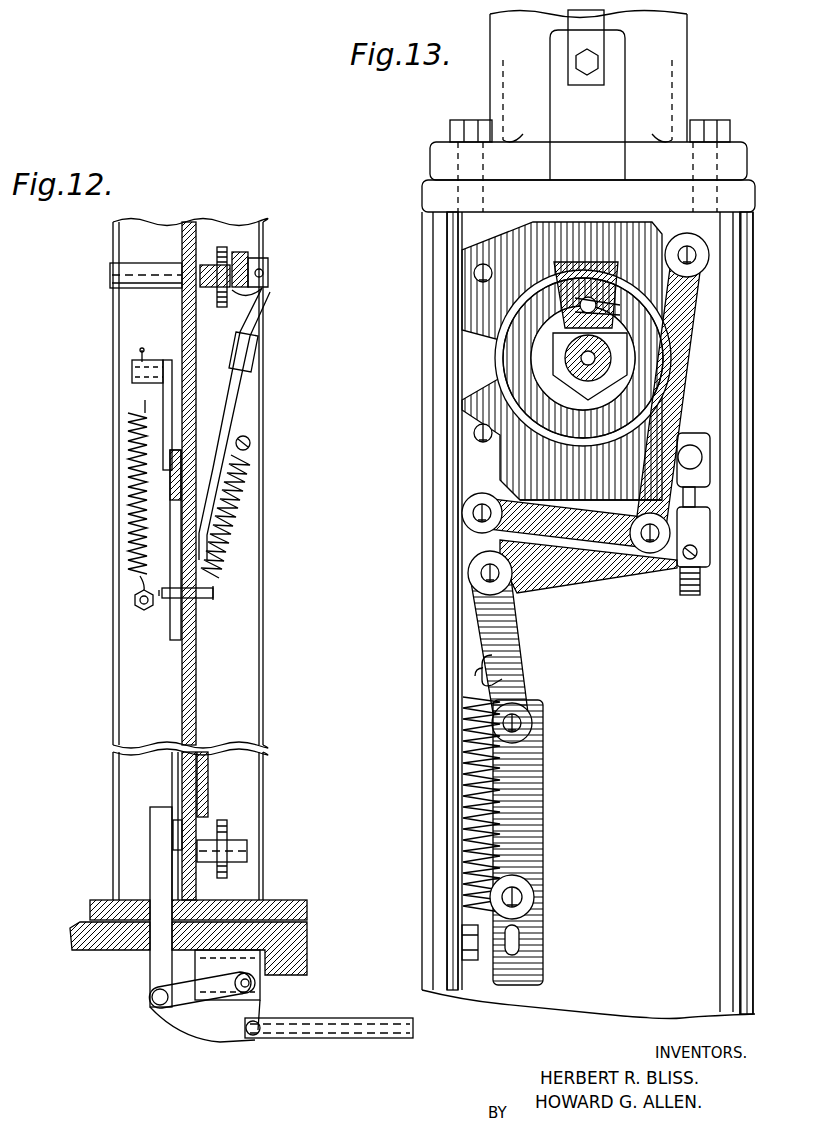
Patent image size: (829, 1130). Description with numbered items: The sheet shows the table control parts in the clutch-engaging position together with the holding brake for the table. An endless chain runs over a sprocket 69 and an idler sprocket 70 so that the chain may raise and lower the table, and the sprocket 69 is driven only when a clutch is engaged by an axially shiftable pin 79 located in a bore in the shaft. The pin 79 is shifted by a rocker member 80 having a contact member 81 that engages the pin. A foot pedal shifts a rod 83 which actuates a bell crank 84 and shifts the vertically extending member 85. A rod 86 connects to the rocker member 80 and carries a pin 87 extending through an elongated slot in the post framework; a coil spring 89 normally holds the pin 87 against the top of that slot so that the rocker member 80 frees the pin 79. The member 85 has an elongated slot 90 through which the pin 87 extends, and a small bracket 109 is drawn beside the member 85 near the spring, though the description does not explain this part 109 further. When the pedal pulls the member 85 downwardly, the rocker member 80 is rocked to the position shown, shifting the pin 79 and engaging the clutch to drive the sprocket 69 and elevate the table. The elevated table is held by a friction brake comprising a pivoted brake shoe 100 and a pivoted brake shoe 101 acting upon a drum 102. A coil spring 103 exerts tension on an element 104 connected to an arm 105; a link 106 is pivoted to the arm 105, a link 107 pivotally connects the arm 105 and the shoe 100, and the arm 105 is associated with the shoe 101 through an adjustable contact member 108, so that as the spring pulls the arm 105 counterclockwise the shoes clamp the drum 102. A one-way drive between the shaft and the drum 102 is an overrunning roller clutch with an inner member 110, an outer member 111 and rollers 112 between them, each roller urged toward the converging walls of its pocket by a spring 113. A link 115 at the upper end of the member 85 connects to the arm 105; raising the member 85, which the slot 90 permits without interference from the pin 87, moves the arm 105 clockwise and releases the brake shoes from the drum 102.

In FIG. 12, the sprocket 69 is at (224, 250).
In FIG. 12, the idler sprocket 70 is at (228, 825).
In FIG. 12, the axially shiftable pin 79 is at (210, 265).
In FIG. 12, the rocker member 80 is at (264, 262).
In FIG. 12, the contact member 81 is at (248, 298).
In FIG. 12, the rod 83 is at (296, 1040).
In FIG. 12, the bell crank 84 is at (205, 1018).
In FIG. 12, the vertically extending member 85 is at (175, 638).
In FIG. 13, the vertically extending member 85 is at (533, 835).
In FIG. 12, the rod 86 is at (238, 393).
In FIG. 12, the pin 87 is at (208, 605).
In FIG. 12, the coil spring 89 is at (235, 488).
In FIG. 12, the elongated slot 90 is at (170, 612).
In FIG. 13, the brake shoe 100 is at (640, 235).
In FIG. 13, the brake shoe 101 is at (597, 490).
In FIG. 13, the drum 102 is at (503, 320).
In FIG. 12, the coil spring 103 is at (130, 493).
In FIG. 13, the coil spring 103 is at (503, 807).
In FIG. 13, the element 104 is at (503, 617).
In FIG. 13, the arm 105 is at (618, 530).
In FIG. 13, the link 106 is at (622, 565).
In FIG. 13, the link 107 is at (680, 420).
In FIG. 13, the adjustable contact member 108 is at (690, 492).
In FIG. 12, the bracket 109 is at (132, 355).
In FIG. 13, the inner member 110 is at (563, 255).
In FIG. 13, the outer member 111 is at (585, 265).
In FIG. 13, the rollers 112 is at (597, 298).
In FIG. 13, the spring 113 is at (558, 345).
In FIG. 12, the link 115 is at (163, 396).
In FIG. 13, the link 115 is at (521, 668).